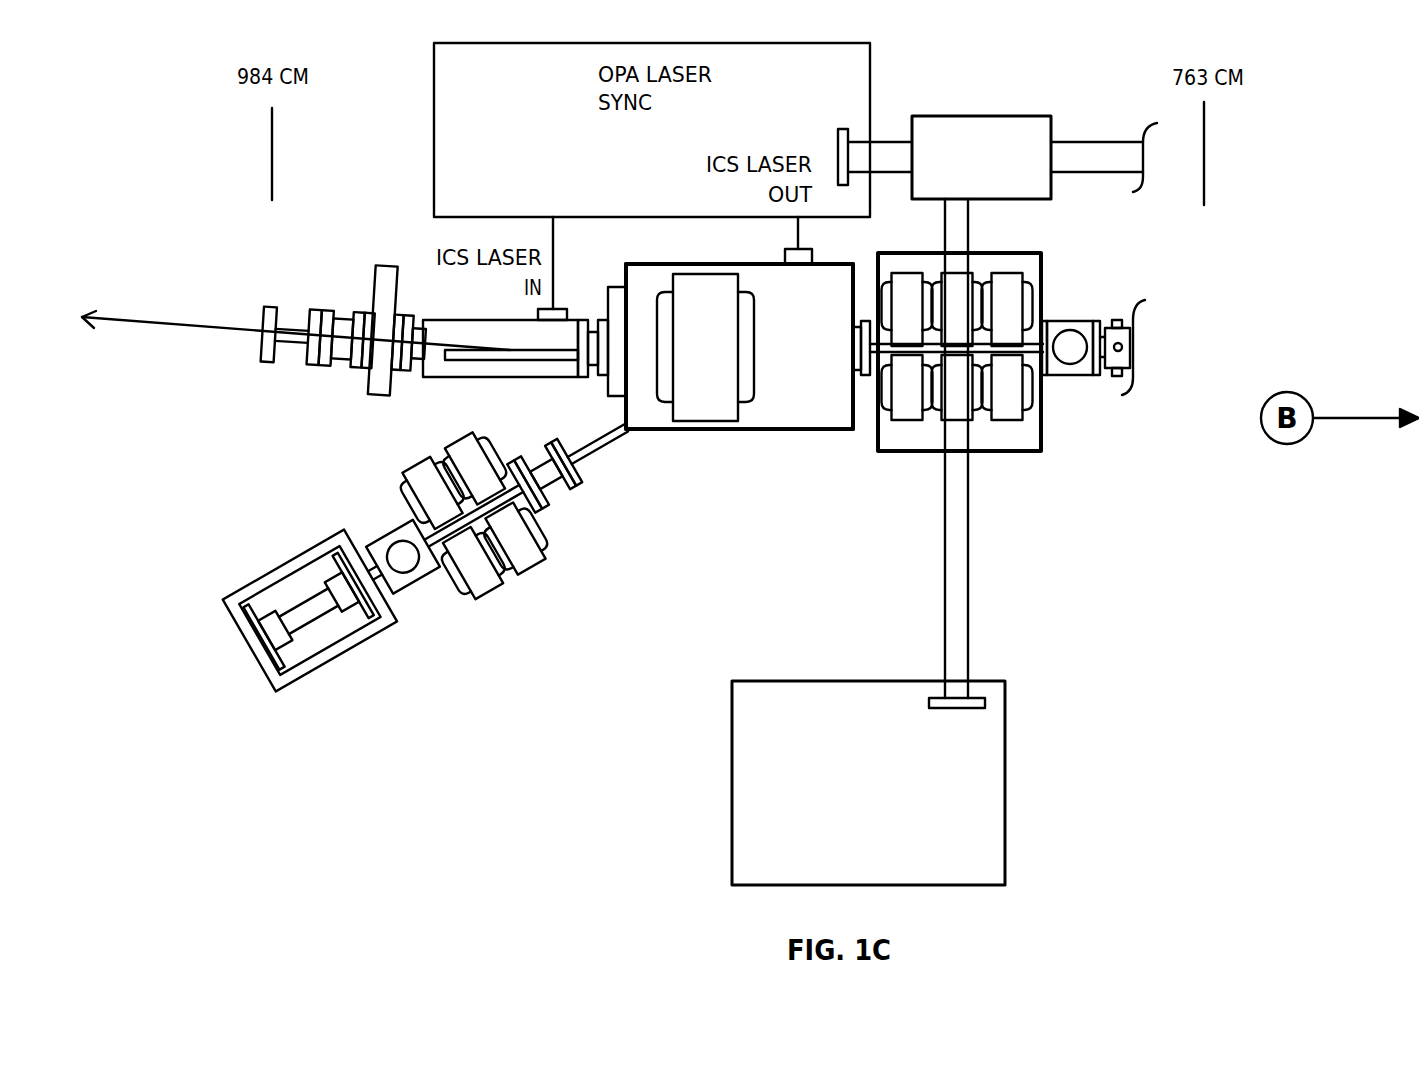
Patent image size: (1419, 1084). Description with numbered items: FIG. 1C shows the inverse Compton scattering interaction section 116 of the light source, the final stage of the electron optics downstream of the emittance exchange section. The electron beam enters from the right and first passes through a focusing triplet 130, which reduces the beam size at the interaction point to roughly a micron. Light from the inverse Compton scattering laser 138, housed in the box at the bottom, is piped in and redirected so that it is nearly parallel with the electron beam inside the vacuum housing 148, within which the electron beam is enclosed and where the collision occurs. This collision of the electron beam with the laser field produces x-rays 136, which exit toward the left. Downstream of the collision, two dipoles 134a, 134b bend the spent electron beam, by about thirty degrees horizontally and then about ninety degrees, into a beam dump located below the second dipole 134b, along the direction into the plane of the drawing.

The inverse Compton scattering (ICS) interaction section 116 is at (658, 259).
The x-rays 136 is at (295, 314).
The vacuum housing 148 is at (648, 425).
The dipole magnet 134a is at (715, 418).
The dipole magnet 134b is at (312, 670).
The focusing triplet 130 is at (1032, 452).
The inverse Compton scattering laser 138 is at (854, 812).